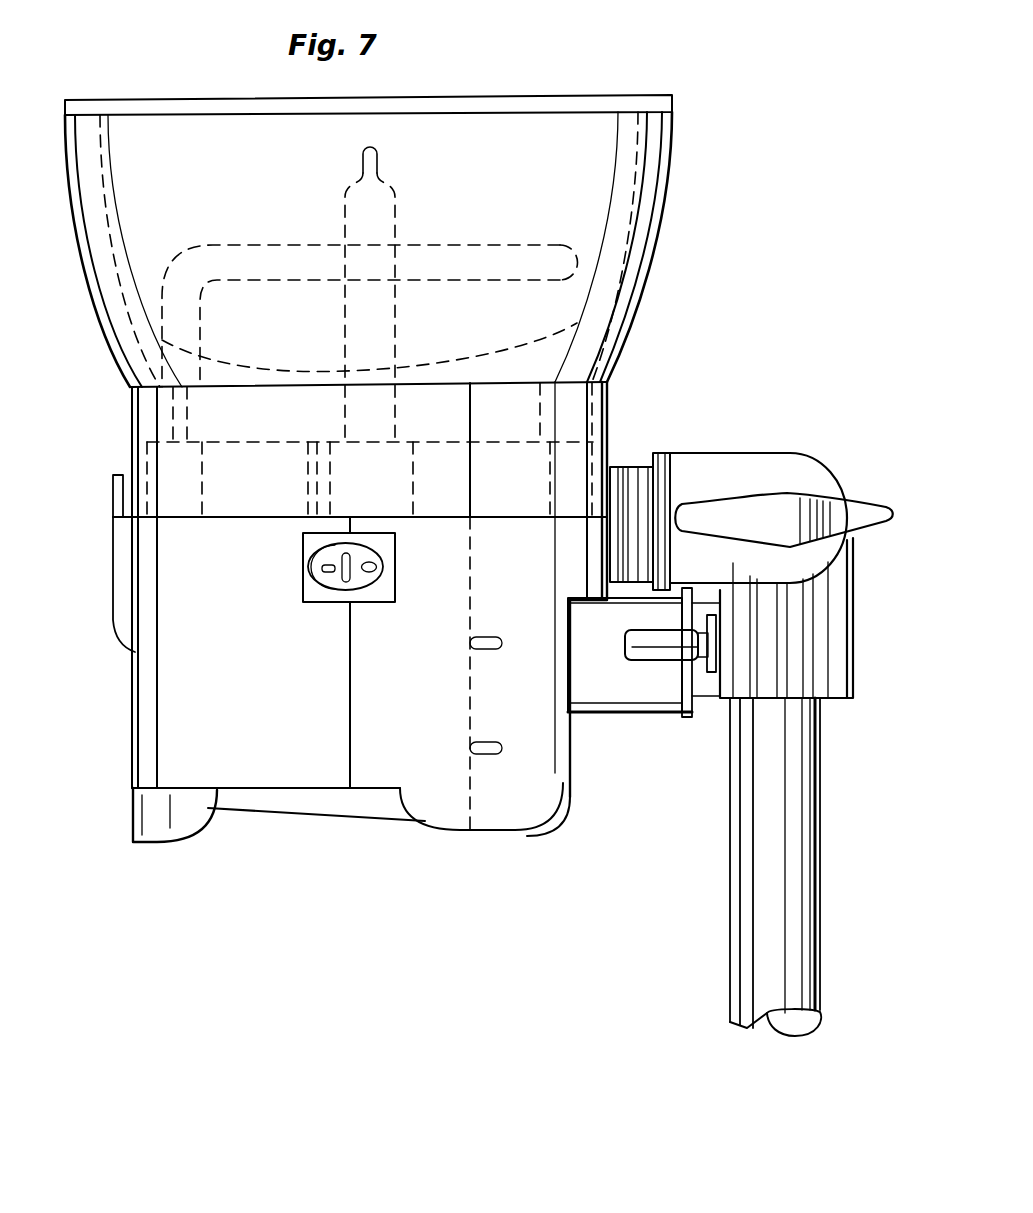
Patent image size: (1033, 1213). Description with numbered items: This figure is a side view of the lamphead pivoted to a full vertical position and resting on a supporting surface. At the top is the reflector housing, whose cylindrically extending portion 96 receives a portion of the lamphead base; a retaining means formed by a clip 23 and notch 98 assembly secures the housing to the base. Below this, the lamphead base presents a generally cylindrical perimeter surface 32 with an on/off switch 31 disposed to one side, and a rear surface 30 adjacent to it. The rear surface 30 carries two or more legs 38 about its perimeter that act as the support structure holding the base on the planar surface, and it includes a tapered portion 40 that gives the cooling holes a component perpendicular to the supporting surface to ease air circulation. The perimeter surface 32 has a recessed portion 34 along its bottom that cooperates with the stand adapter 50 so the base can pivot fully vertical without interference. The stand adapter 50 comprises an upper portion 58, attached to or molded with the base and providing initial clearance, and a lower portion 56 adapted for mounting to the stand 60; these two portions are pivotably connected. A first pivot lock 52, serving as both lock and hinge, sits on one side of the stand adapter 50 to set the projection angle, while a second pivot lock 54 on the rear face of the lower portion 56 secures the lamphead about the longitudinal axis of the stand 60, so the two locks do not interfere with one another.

The clip 23 is at (110, 507).
The rear surface 30 is at (297, 832).
The on/off switch 31 is at (303, 601).
The perimeter surface 32 is at (133, 767).
The recessed portion 34 is at (587, 678).
The legs 38 is at (157, 828).
The tapered portion 40 is at (370, 807).
The stand adapter 50 is at (880, 690).
The first pivot lock 52 is at (788, 498).
The second pivot lock 54 is at (663, 652).
The lower portion 56 is at (842, 620).
The upper portion 58 is at (778, 462).
The stand 60 is at (740, 933).
The cylindrically extending portion 96 is at (130, 417).
The notch 98 is at (118, 464).